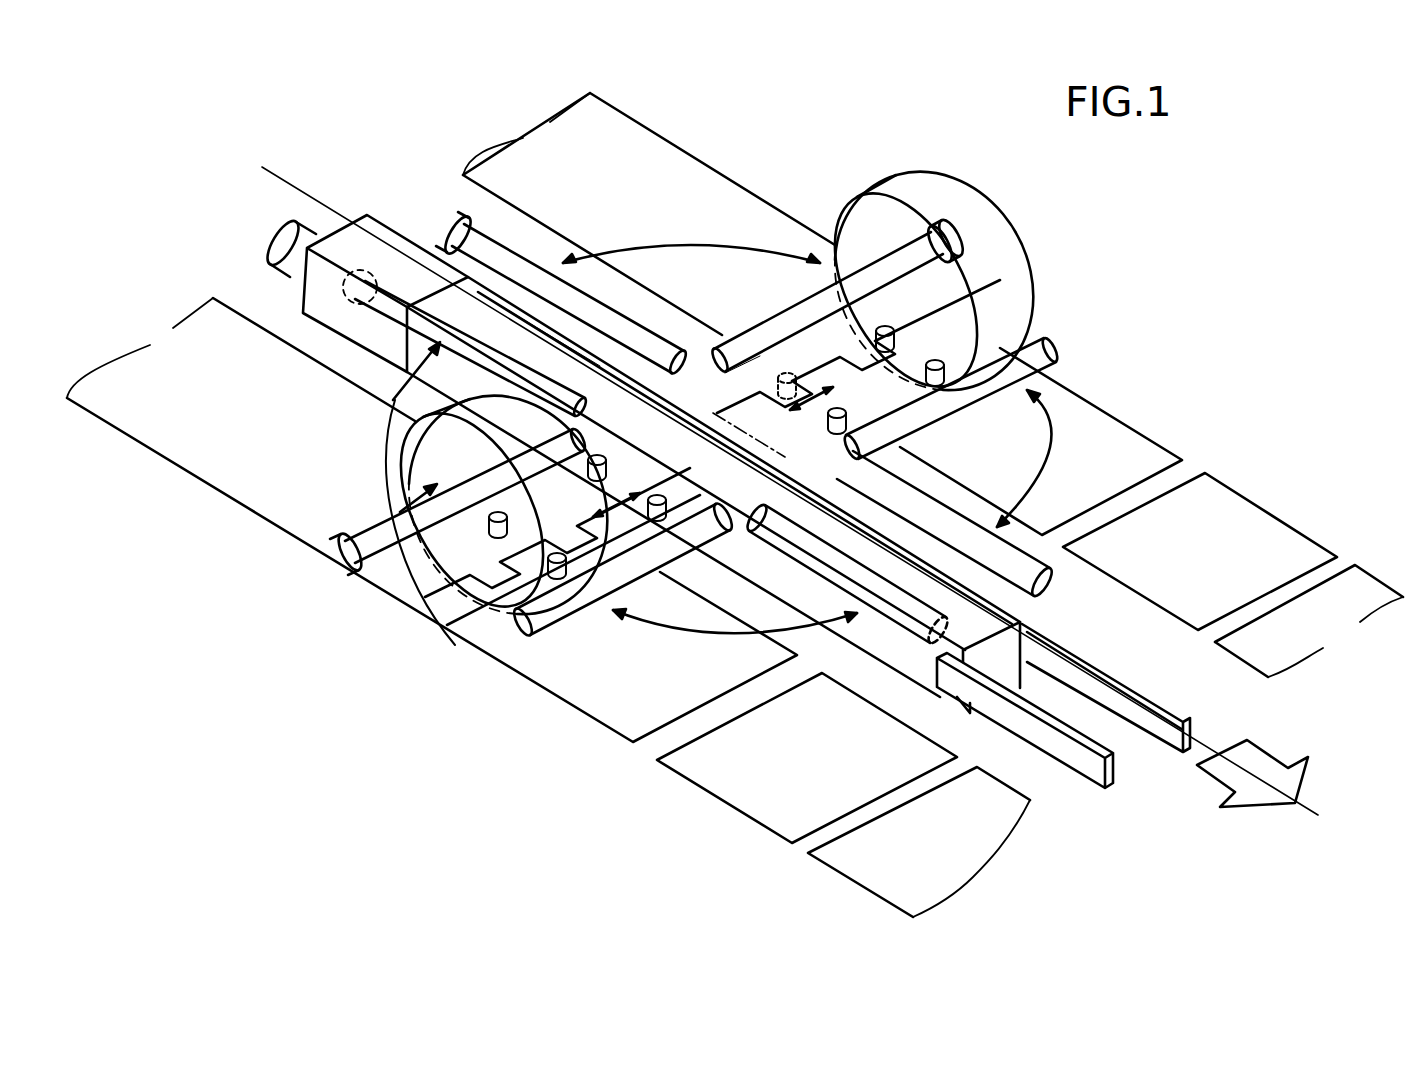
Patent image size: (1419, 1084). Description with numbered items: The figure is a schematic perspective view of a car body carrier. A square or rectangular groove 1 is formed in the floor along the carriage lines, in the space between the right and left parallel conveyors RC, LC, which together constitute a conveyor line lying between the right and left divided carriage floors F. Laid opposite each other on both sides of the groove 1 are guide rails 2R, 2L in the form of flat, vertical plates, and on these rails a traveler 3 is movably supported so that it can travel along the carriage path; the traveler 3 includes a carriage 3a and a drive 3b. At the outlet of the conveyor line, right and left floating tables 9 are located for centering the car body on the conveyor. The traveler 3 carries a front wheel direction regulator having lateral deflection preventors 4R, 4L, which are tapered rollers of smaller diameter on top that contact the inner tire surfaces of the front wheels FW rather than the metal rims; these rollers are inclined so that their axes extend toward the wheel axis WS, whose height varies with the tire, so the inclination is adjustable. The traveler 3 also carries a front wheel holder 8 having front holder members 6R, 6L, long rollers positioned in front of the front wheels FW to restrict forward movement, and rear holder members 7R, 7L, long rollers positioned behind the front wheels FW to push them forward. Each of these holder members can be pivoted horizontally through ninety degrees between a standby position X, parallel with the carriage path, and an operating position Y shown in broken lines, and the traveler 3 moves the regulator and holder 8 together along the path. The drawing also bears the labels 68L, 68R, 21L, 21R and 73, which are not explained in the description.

The groove 1 is at (1172, 826).
The left conveyor LC is at (667, 173).
The right conveyor RC is at (230, 457).
The traveler 3 is at (851, 657).
The carriage 3a is at (877, 643).
The drive 3b is at (347, 337).
The rear holder member 7L is at (548, 277).
The rear holder member 7R is at (403, 297).
The left collar 68L is at (957, 220).
The right collar 68R is at (347, 562).
The front wheels FW is at (870, 228).
The front wheel holder 8 is at (735, 330).
The wheel axis WS is at (778, 352).
The left cam plate 21L is at (903, 372).
The right cam plate 21R is at (615, 610).
The lateral deflection preventor 4L is at (920, 370).
The lateral deflection preventor 4R is at (555, 578).
The front holder member 6L is at (1047, 380).
The front holder member 6R is at (577, 597).
The guide rail 2L is at (1150, 700).
The guide rail 2R is at (1083, 763).
The floating tables 9 is at (701, 799).
The support plate 73 is at (1243, 547).
The carriage floors F is at (1352, 593).
The standby position X is at (718, 445).
The operating position Y is at (738, 442).